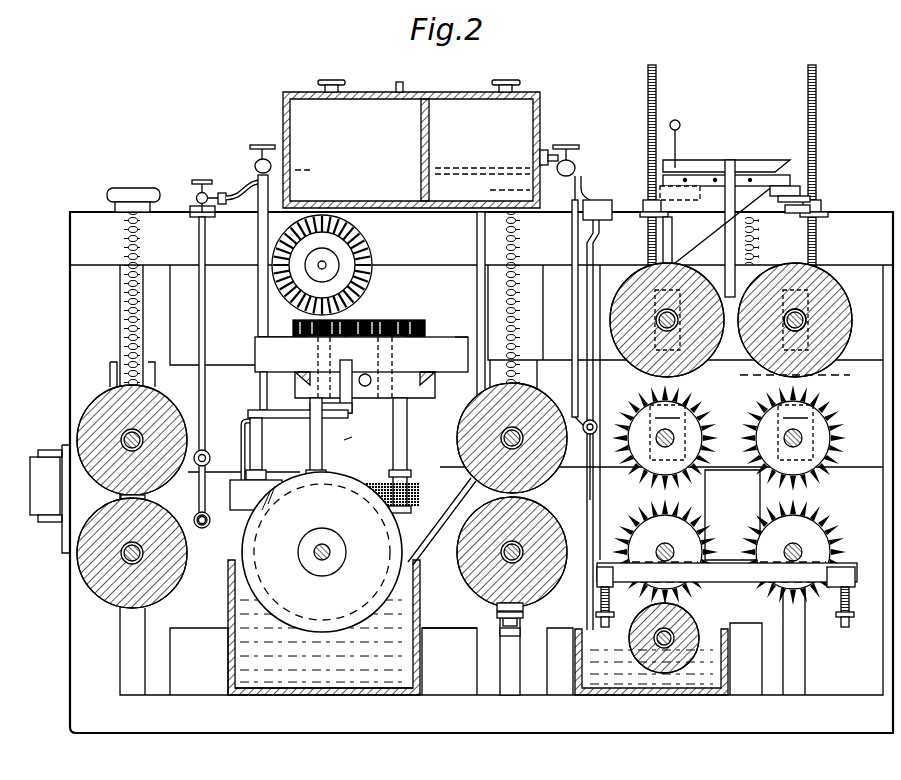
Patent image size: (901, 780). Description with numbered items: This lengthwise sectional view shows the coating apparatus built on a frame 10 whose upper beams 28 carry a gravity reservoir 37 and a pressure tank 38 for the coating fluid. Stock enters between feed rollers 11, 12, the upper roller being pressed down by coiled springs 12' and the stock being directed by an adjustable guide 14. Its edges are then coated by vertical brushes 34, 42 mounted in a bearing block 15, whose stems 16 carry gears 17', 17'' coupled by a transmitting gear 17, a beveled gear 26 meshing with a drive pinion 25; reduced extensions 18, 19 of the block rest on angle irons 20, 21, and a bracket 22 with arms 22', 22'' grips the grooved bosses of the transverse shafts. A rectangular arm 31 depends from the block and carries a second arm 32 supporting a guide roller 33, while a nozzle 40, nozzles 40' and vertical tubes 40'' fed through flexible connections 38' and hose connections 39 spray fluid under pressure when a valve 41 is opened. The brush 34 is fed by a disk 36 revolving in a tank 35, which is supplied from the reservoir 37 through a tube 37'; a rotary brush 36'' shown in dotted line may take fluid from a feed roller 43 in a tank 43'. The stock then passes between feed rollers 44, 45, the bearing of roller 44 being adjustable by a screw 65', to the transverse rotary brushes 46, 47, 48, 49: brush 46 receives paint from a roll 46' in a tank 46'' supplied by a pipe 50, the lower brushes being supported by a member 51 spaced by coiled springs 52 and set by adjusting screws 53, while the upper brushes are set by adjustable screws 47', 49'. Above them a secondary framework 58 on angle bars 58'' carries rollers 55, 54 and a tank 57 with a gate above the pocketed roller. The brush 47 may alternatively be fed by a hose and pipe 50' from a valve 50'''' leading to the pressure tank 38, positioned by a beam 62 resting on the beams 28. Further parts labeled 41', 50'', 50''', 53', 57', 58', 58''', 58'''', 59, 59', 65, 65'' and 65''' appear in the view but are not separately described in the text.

The frame 10 is at (481, 472).
The feed roller 11 is at (108, 512).
The feed roller 12 is at (132, 435).
The coiled springs 12' is at (112, 326).
The adjustable guide 14 is at (30, 478).
The bearing block 15 is at (330, 356).
The stems or shafts 16 is at (310, 447).
The transmitting gear 17 is at (359, 313).
The gear 17' is at (424, 314).
The gear 17'' is at (289, 327).
The reduced extension 18 is at (255, 352).
The reduced extension 19 is at (466, 338).
The angle iron 20 is at (260, 384).
The angle iron 21 is at (432, 386).
The bracket 22 is at (341, 394).
The arm 22' is at (379, 306).
The arm 22'' is at (351, 441).
The drive pinion 25 is at (360, 240).
The beveled gear 26 is at (282, 325).
The beams 28 is at (124, 216).
The rectangular arm 31 is at (298, 425).
The second rectangular arm 32 is at (241, 432).
The guide roller 33 is at (236, 512).
The brush 34 is at (322, 552).
The tank 35 is at (421, 651).
The disk 36 is at (336, 552).
The rotary brush 36'' is at (355, 566).
The gravity reservoir 37 is at (484, 273).
The tube 37' is at (442, 521).
The pressure tank 38 is at (411, 144).
The flexible connections 38' is at (229, 211).
The flexible hose connections 39 is at (252, 220).
The nozzle 40 is at (252, 370).
The nozzles 40' is at (191, 513).
The vertical tubes 40'' is at (195, 227).
The valve 41 is at (262, 149).
The valve 41' is at (203, 184).
The brush 42 is at (410, 505).
The feed roller 43 is at (308, 627).
The tank 43' is at (324, 705).
The feed roller 44 is at (515, 552).
The feed roller 45 is at (490, 189).
The rotary brush 46 is at (671, 552).
The roll 46' is at (681, 638).
The tank 46'' is at (668, 662).
The rotary brush 47 is at (671, 438).
The adjustable screw 47' is at (655, 191).
The rotary brush 48 is at (822, 522).
The rotary brush 49 is at (800, 438).
The adjustable screw 49' is at (781, 224).
The supply pipe 50 is at (563, 354).
The hose and pipe 50' is at (608, 425).
The pipe joint 50'' is at (579, 449).
The valve 50''' is at (585, 162).
The valve 50'''' is at (588, 140).
The member 51 is at (597, 577).
The coiled springs 52 is at (600, 596).
The adjusting screws 53 is at (715, 513).
The nut 53' is at (716, 614).
The roller 54 is at (826, 368).
The roller 55 is at (695, 368).
The tank 57 is at (726, 153).
The bar 57' is at (721, 228).
The framework 58 is at (809, 177).
The post 58' is at (771, 247).
The angle bars 58'' is at (737, 349).
The threaded rod 58''' is at (827, 197).
The bracket 58'''' is at (821, 190).
The hub 59 is at (830, 320).
The shaft line 59' is at (810, 355).
The beam 62 is at (593, 198).
The pedestal 65 is at (497, 636).
The adjustable screw 65' is at (524, 631).
The pedestal part 65'' is at (498, 636).
The pedestal part 65''' is at (492, 613).